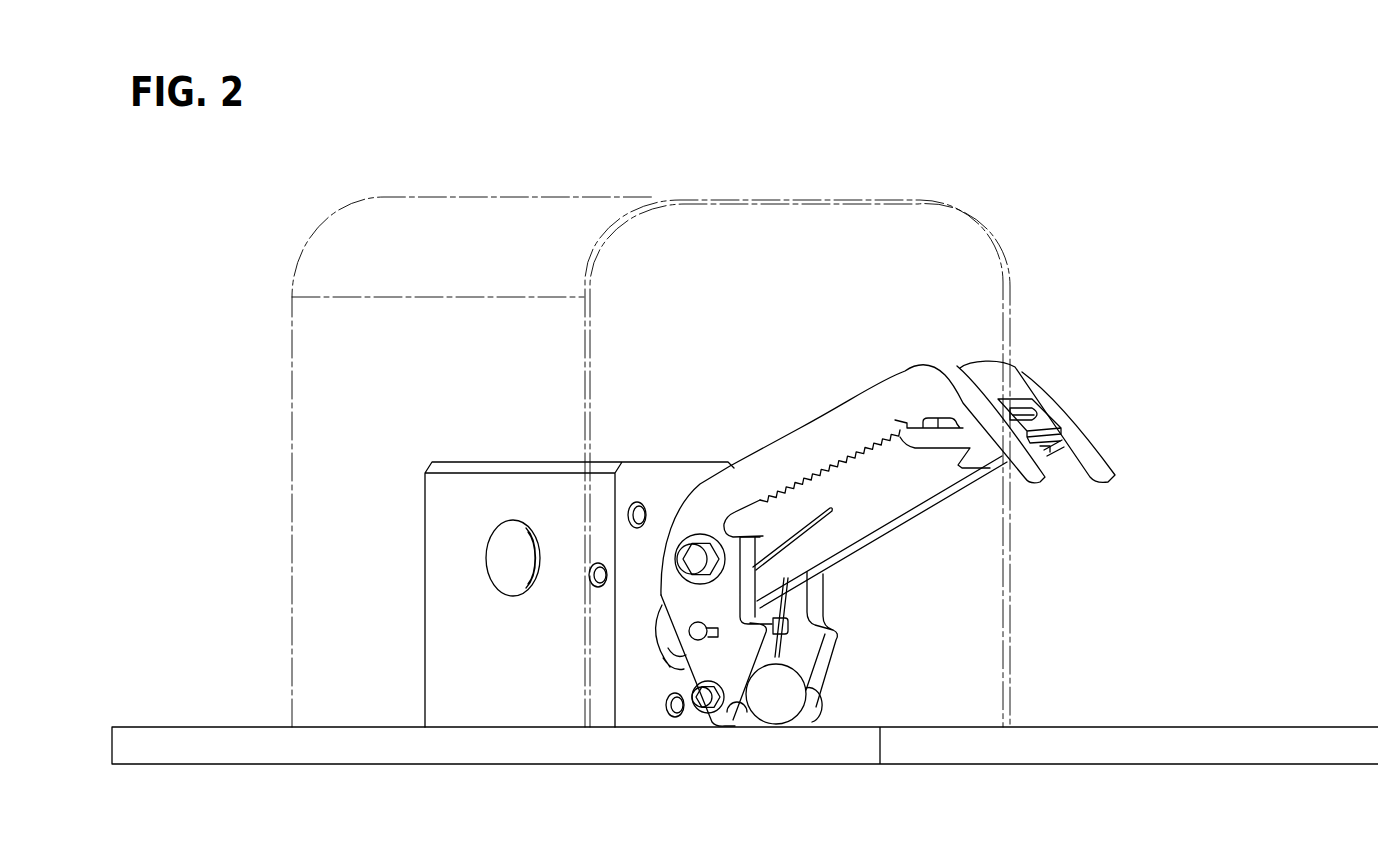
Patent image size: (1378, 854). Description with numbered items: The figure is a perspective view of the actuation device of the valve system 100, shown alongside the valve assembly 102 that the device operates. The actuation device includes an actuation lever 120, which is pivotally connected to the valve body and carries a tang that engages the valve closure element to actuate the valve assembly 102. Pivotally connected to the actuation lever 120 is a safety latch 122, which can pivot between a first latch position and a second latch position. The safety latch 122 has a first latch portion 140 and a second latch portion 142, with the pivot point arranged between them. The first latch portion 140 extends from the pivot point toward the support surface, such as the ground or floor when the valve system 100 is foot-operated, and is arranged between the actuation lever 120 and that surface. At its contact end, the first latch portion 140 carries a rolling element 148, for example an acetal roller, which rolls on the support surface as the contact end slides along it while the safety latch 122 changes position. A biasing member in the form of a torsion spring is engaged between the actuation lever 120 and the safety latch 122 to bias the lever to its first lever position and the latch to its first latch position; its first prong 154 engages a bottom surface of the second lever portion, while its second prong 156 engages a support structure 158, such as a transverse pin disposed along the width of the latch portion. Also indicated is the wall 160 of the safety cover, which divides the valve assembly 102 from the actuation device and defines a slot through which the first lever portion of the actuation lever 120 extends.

The valve system 100 is at (416, 148).
The valve assembly 102 is at (448, 436).
The actuation lever 120 is at (996, 490).
The safety latch 122 is at (888, 427).
The first latch portion 140 is at (696, 671).
The second latch portion 142 is at (813, 433).
The rolling element 148 is at (765, 722).
The first prong 154 is at (826, 510).
The second prong 156 is at (782, 643).
The support structure 158 is at (777, 621).
The wall 160 is at (318, 416).